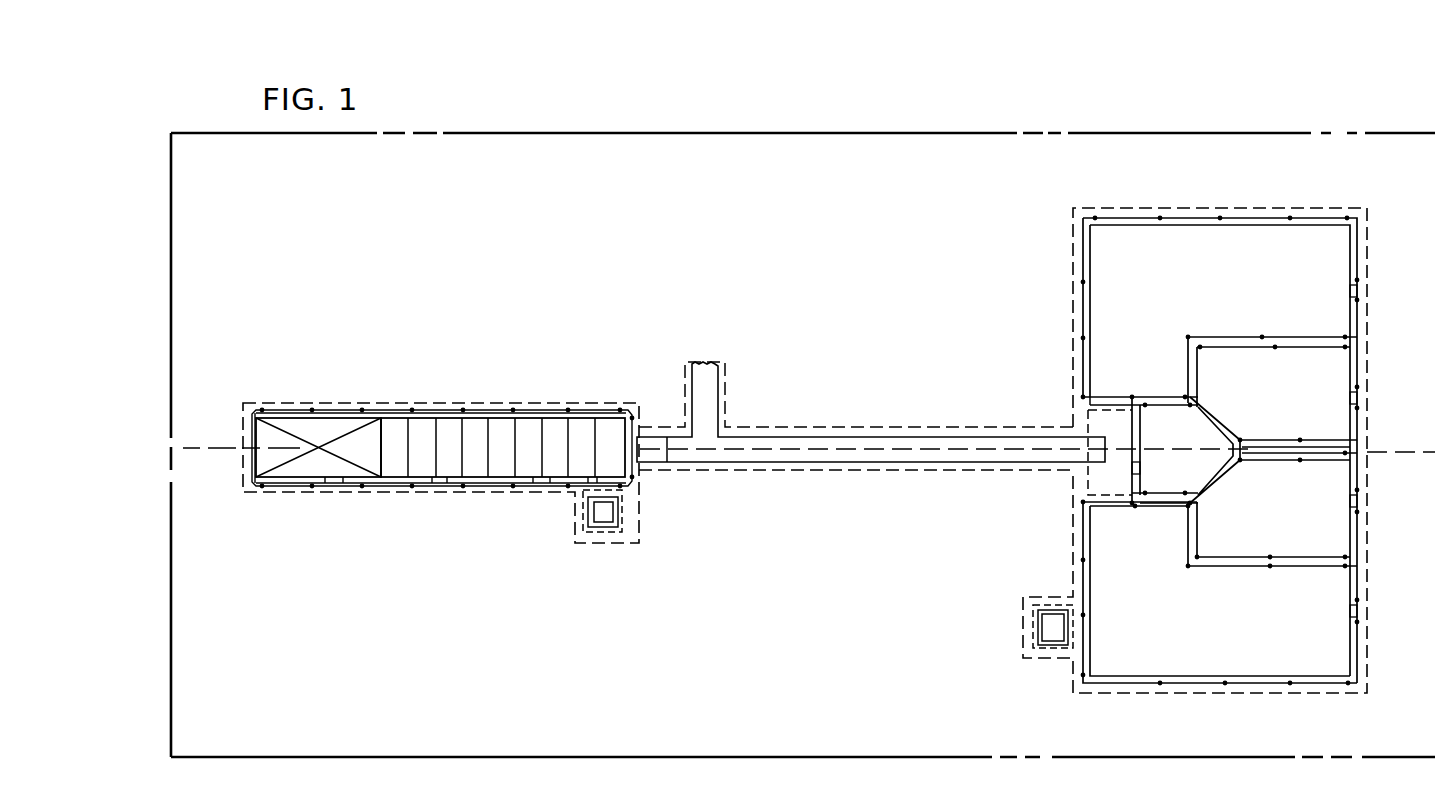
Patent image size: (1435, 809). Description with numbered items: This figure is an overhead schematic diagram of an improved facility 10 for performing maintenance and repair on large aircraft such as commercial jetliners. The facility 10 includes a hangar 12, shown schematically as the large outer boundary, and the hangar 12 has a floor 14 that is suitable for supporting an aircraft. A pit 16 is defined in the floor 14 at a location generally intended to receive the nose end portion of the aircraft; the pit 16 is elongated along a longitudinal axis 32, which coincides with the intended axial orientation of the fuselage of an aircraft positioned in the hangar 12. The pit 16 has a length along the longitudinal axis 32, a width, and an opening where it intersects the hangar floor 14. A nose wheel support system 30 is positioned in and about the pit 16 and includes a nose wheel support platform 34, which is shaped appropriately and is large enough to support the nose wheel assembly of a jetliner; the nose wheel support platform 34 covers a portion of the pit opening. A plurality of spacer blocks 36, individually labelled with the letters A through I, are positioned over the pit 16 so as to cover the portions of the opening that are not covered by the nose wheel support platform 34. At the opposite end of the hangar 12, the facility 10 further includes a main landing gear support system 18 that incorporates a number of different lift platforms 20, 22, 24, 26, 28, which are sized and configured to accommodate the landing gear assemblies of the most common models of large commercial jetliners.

The facility 10 is at (799, 92).
The hangar 12 is at (542, 133).
The floor 14 is at (894, 220).
The pit 16 is at (500, 402).
The main landing gear support system 18 is at (1000, 550).
The lift platform 20 is at (1218, 298).
The lift platform 22 is at (1190, 442).
The lift platform 24 is at (1294, 407).
The lift platform 26 is at (1304, 521).
The lift platform 28 is at (1204, 629).
The nose wheel support system 30 is at (406, 390).
The longitudinal axis 32 is at (213, 447).
The nose wheel support platform 34 is at (287, 473).
The spacer blocks 36 is at (447, 470).